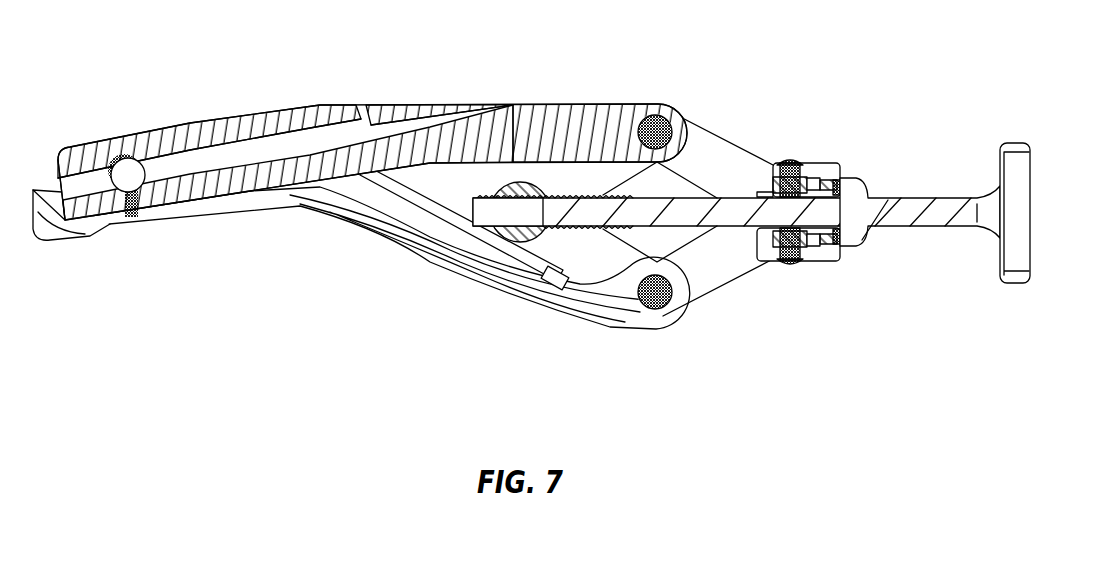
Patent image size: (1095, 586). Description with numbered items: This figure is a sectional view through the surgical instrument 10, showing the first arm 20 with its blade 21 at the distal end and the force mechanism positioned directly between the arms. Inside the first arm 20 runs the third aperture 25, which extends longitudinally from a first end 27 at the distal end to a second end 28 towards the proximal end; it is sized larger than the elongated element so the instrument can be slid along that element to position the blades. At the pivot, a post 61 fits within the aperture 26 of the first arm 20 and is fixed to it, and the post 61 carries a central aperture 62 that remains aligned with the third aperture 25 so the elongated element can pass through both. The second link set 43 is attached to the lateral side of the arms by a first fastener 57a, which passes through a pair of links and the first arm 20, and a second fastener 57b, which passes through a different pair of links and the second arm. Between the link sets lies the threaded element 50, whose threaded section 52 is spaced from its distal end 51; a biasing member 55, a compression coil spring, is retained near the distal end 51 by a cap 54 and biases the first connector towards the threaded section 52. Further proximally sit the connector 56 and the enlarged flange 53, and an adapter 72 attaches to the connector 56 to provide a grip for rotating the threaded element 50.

The surgical instrument 10 is at (0, 341).
The first arm 20 is at (233, 118).
The blade 21 is at (37, 213).
The third aperture 25 is at (283, 145).
The aperture 26 is at (112, 139).
The first end 27 is at (58, 185).
The second end 28 is at (480, 105).
The second link set 43 is at (707, 273).
The threaded element 50 is at (717, 207).
The distal end 51 is at (473, 200).
The threaded section 52 is at (575, 194).
The flange 53 is at (850, 180).
The cap 54 is at (478, 196).
The biasing member 55 is at (500, 186).
The connector 56 is at (810, 177).
The first fastener 57a is at (662, 112).
The second fastener 57b is at (670, 310).
The post 61 is at (143, 195).
The central aperture 62 is at (132, 173).
The adapter 72 is at (1013, 150).